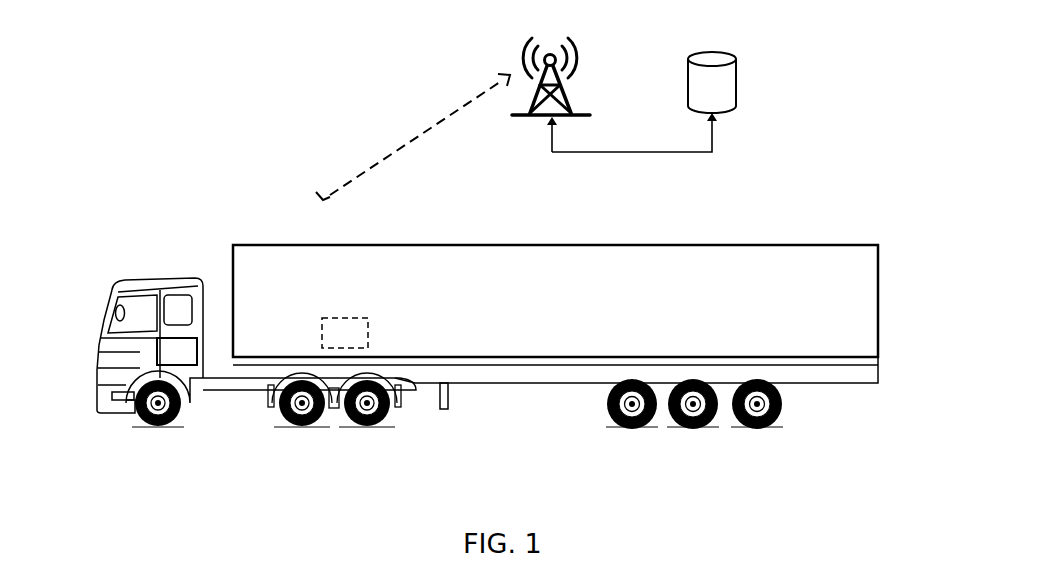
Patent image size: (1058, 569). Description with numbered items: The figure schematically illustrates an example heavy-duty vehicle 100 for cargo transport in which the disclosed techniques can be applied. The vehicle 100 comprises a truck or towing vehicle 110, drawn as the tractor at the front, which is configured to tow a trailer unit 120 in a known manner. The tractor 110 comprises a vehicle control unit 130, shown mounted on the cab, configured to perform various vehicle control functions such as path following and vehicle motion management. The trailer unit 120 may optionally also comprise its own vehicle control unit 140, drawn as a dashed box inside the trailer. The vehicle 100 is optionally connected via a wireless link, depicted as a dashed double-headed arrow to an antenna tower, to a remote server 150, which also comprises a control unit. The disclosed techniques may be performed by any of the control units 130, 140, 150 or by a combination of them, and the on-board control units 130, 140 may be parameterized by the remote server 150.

The vehicle 100 is at (118, 165).
The truck or towing vehicle 110 is at (133, 285).
The trailer unit 120 is at (405, 248).
The vehicle control unit 130 is at (177, 351).
The vehicle control unit 140 is at (345, 333).
The remote server 150 is at (738, 96).